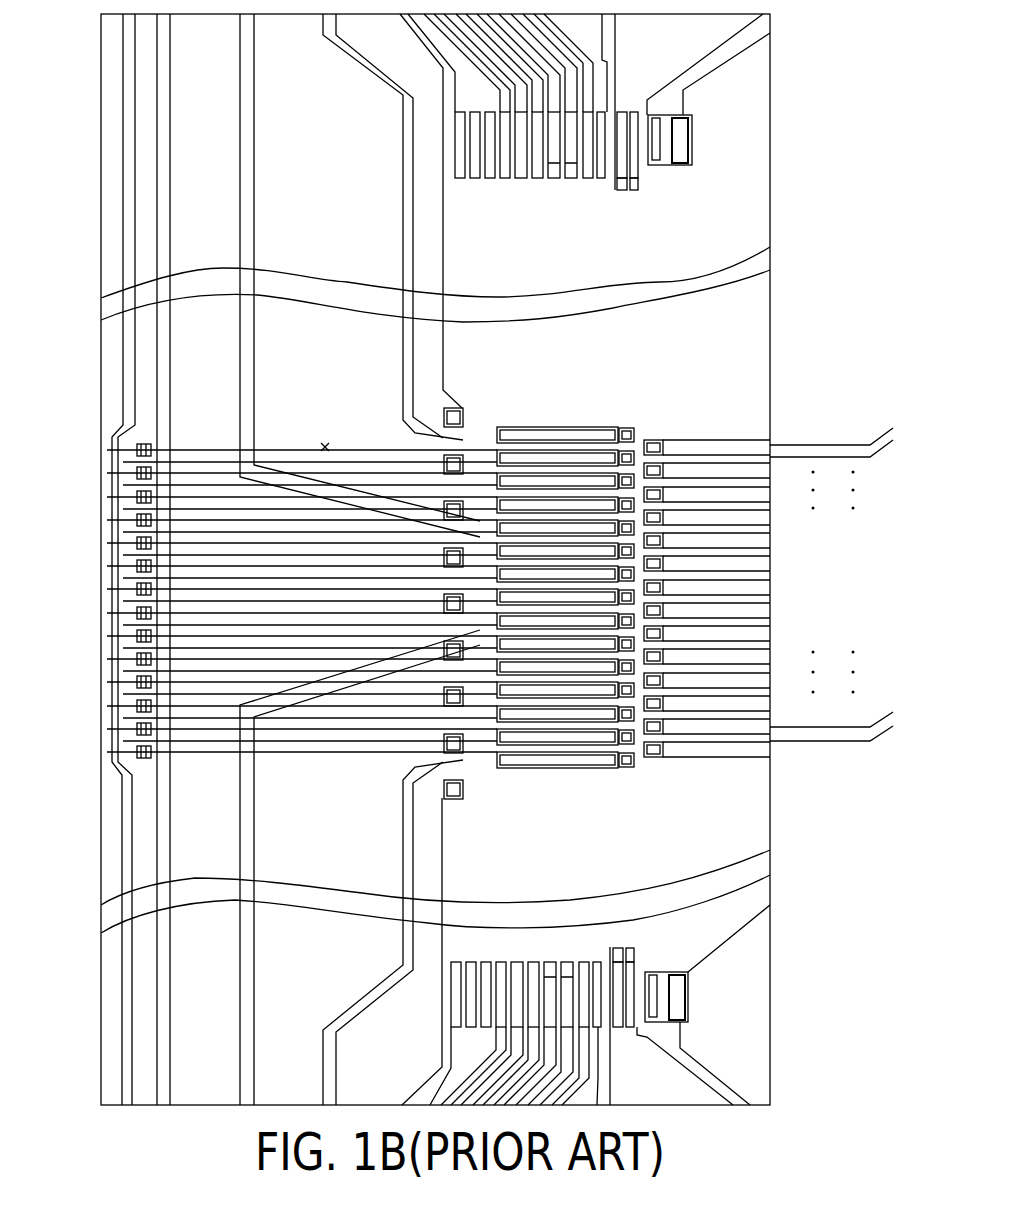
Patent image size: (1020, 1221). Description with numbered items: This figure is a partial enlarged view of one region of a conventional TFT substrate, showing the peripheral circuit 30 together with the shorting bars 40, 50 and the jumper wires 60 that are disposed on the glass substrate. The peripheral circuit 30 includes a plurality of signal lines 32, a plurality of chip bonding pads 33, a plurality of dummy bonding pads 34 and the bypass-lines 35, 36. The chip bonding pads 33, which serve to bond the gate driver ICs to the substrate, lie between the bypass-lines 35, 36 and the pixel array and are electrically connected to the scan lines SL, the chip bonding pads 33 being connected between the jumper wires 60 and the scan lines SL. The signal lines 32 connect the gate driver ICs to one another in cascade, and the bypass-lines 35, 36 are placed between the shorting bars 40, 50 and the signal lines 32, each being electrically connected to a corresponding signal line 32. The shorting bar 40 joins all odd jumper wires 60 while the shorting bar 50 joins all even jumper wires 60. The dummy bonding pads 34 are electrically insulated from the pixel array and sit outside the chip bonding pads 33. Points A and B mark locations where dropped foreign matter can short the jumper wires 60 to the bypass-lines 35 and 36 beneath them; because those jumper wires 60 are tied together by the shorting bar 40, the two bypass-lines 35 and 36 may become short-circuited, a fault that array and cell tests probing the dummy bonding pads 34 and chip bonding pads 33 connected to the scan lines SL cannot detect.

The shorting bar 40 is at (103, 78).
The shorting bar 50 is at (147, 113).
The jumper wires 60 is at (157, 447).
The peripheral circuit 30 is at (832, 92).
The signal lines 32 is at (712, 22).
The chip bonding pads 33 is at (633, 163).
The dummy bonding pads 34 is at (570, 435).
The bypass-line 35 is at (197, 343).
The bypass-line 36 is at (372, 355).
The point A is at (199, 491).
The point B is at (323, 449).
The scan lines SL is at (830, 748).